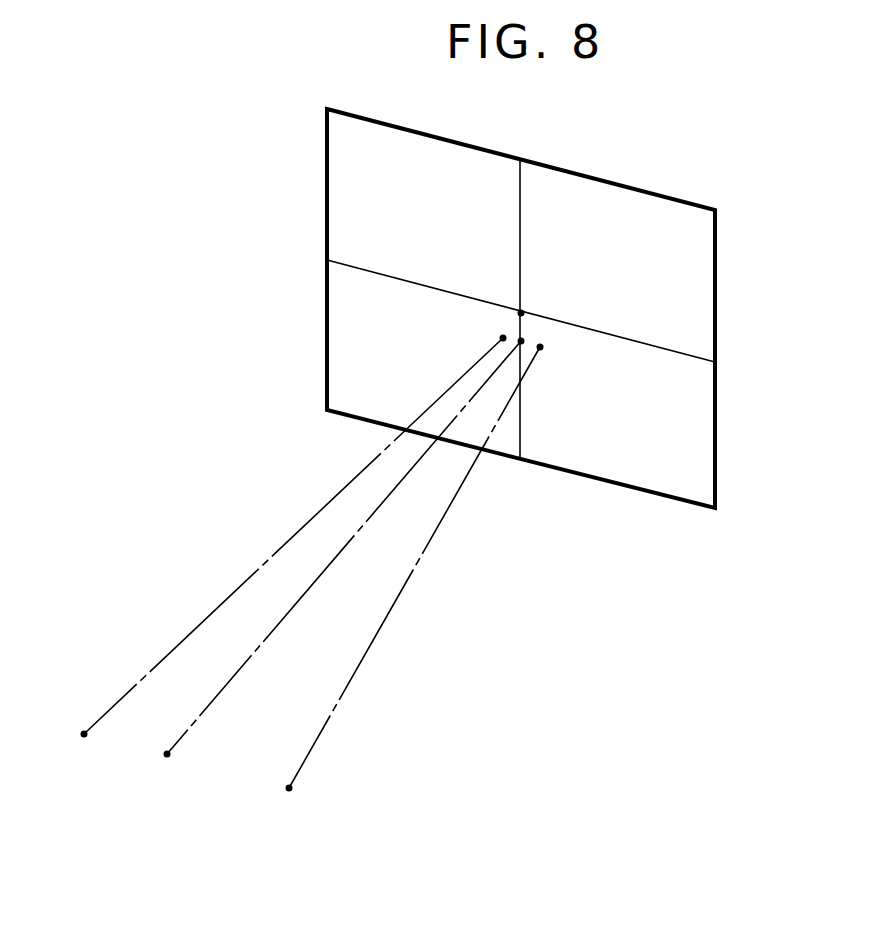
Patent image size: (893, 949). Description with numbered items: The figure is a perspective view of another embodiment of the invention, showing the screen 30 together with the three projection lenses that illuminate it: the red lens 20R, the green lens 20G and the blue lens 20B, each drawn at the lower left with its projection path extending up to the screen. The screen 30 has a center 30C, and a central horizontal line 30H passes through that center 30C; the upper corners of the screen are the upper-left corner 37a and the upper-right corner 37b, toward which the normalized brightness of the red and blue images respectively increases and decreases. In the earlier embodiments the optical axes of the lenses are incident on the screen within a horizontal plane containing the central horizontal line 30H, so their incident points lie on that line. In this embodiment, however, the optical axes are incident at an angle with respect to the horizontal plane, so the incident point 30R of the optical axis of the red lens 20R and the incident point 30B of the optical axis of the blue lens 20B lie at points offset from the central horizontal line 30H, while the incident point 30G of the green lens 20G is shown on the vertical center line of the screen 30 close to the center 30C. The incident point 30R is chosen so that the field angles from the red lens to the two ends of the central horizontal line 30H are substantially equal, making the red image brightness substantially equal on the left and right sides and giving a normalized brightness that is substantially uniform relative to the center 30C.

The screen 30 is at (716, 418).
The center of the screen 30C is at (523, 311).
The central horizontal line 30H is at (687, 351).
The incident point 30R is at (500, 339).
The green image projection point 30G is at (523, 340).
The blue image projection point 30B is at (541, 350).
The upper-left corner 37a is at (716, 206).
The upper-right corner 37b is at (329, 105).
The red lens 20R is at (270, 558).
The green projection lens 20G is at (323, 572).
The blue lens 20B is at (396, 592).